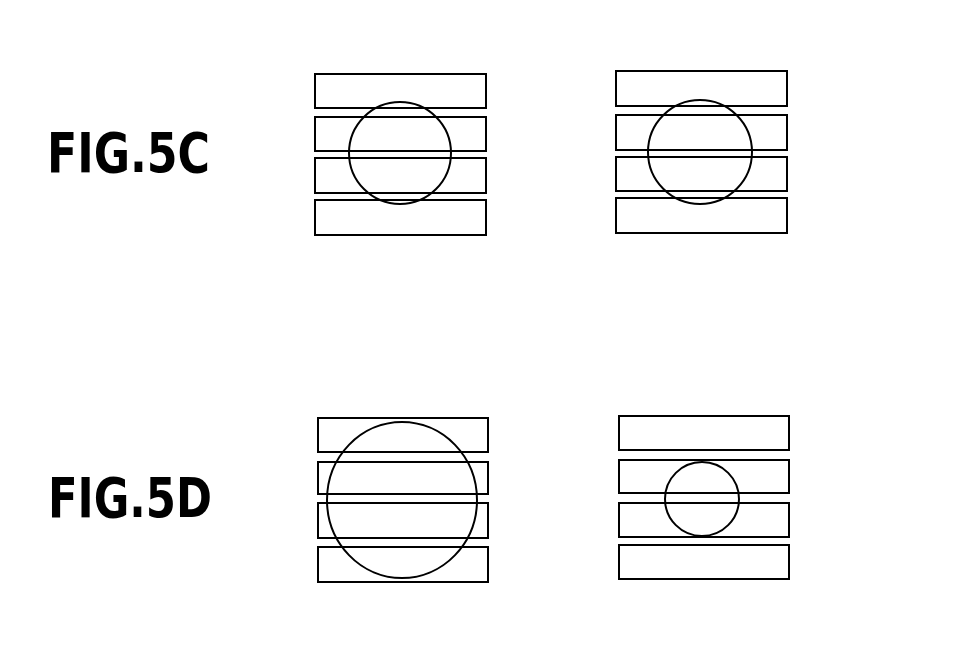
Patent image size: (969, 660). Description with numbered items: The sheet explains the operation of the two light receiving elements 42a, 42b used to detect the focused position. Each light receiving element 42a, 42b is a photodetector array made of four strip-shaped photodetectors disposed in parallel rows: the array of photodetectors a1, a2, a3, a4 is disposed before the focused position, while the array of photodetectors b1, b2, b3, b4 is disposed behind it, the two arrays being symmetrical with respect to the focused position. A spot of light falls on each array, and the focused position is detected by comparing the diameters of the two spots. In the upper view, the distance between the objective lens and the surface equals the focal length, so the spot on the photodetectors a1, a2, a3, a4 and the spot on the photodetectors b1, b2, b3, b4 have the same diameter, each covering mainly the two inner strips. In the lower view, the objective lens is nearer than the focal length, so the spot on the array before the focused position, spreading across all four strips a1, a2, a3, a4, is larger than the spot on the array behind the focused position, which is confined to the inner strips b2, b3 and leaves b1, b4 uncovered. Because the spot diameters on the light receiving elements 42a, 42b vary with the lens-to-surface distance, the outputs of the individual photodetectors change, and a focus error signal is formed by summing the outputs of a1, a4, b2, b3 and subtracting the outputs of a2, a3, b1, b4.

In FIG. 5C, the light receiving element 42a is at (325, 74).
In FIG. 5D, the light receiving element 42a is at (332, 418).
In FIG. 5C, the light receiving element 42b is at (637, 70).
In FIG. 5D, the light receiving element 42b is at (642, 416).
In FIG. 5C, the strip-shaped photodetector a1 is at (383, 91).
In FIG. 5D, the strip-shaped photodetector a1 is at (385, 435).
In FIG. 5C, the strip-shaped photodetector a2 is at (383, 134).
In FIG. 5D, the strip-shaped photodetector a2 is at (385, 478).
In FIG. 5C, the strip-shaped photodetector a3 is at (383, 175).
In FIG. 5D, the strip-shaped photodetector a3 is at (385, 520).
In FIG. 5C, the strip-shaped photodetector a4 is at (383, 217).
In FIG. 5D, the strip-shaped photodetector a4 is at (385, 564).
In FIG. 5C, the strip-shaped photodetector b1 is at (719, 88).
In FIG. 5D, the strip-shaped photodetector b1 is at (722, 433).
In FIG. 5C, the strip-shaped photodetector b2 is at (719, 132).
In FIG. 5D, the strip-shaped photodetector b2 is at (722, 476).
In FIG. 5C, the strip-shaped photodetector b3 is at (719, 174).
In FIG. 5D, the strip-shaped photodetector b3 is at (722, 520).
In FIG. 5C, the strip-shaped photodetector b4 is at (719, 215).
In FIG. 5D, the strip-shaped photodetector b4 is at (722, 562).